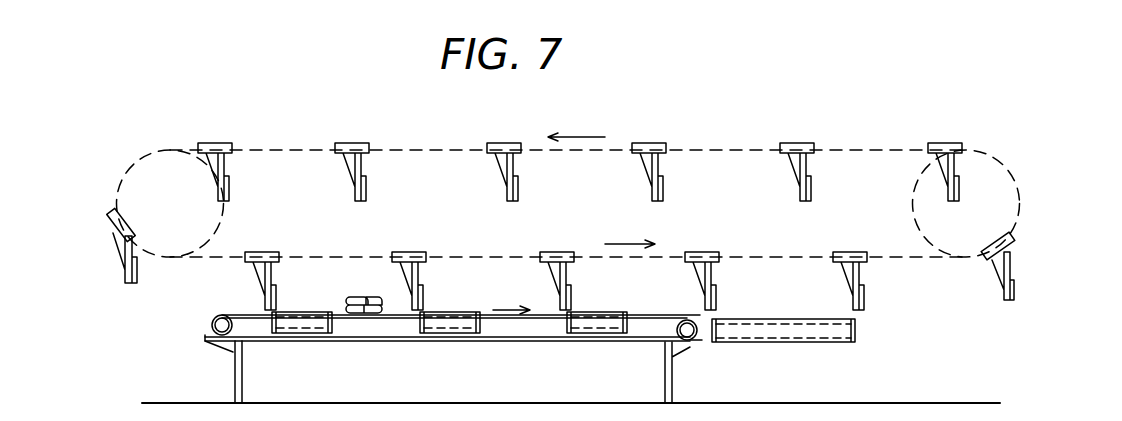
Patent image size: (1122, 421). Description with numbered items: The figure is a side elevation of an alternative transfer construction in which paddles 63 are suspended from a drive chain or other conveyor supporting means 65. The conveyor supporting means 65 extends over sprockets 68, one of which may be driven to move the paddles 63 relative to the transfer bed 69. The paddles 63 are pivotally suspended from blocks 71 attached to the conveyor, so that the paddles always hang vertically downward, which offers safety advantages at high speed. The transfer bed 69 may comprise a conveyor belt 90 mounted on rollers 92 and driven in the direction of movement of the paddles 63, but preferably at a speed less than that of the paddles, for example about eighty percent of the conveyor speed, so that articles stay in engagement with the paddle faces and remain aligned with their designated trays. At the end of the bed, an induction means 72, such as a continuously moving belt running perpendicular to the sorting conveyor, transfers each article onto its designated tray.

The paddles 63 is at (367, 165).
The conveyor supporting means 65 is at (268, 152).
The sprockets 68 is at (123, 180).
The transfer bed 69 is at (326, 298).
The blocks 71 is at (842, 252).
The induction means 72 is at (785, 333).
The conveyor belt 90 is at (374, 343).
The rollers 92 is at (211, 327).